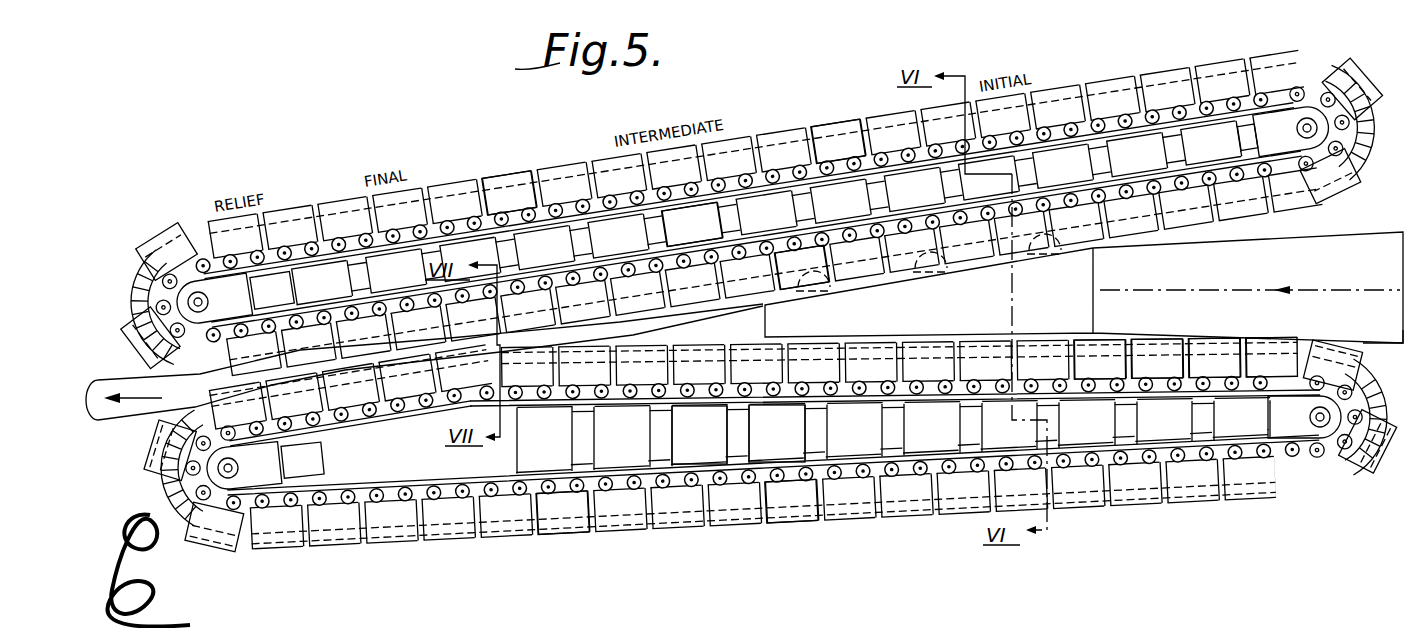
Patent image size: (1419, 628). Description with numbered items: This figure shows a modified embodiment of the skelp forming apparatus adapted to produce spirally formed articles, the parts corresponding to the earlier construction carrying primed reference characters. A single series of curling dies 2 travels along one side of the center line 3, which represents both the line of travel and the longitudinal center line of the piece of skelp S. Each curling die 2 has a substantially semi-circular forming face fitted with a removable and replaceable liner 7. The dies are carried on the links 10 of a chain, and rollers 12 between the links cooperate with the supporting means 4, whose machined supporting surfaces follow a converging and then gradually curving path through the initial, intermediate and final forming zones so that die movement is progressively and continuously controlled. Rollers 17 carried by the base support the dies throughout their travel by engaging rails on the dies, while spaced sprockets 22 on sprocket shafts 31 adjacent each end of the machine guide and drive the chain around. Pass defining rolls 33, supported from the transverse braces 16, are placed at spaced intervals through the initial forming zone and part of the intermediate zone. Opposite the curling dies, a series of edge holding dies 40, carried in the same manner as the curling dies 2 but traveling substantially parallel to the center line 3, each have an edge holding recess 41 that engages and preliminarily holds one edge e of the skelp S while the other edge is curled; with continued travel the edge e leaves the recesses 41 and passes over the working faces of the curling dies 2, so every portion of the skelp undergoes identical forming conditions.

The curling dies 2 is at (822, 279).
The center line 3 is at (1250, 280).
The supporting means 4 is at (774, 238).
The liner 7 is at (1275, 196).
The links of upper chain 10 is at (517, 210).
The rollers 12 is at (824, 158).
The transverse braces 16 is at (730, 223).
The rollers 17 is at (152, 270).
The sprockets 22 is at (180, 280).
The sprocket shafts 31 is at (187, 303).
The pass defining rolls 33 is at (947, 272).
The edge holding dies 40 is at (1138, 348).
The edge holding recess 41 is at (1202, 347).
The skelp S is at (1352, 241).
The opposite edge of skelp e is at (1363, 343).